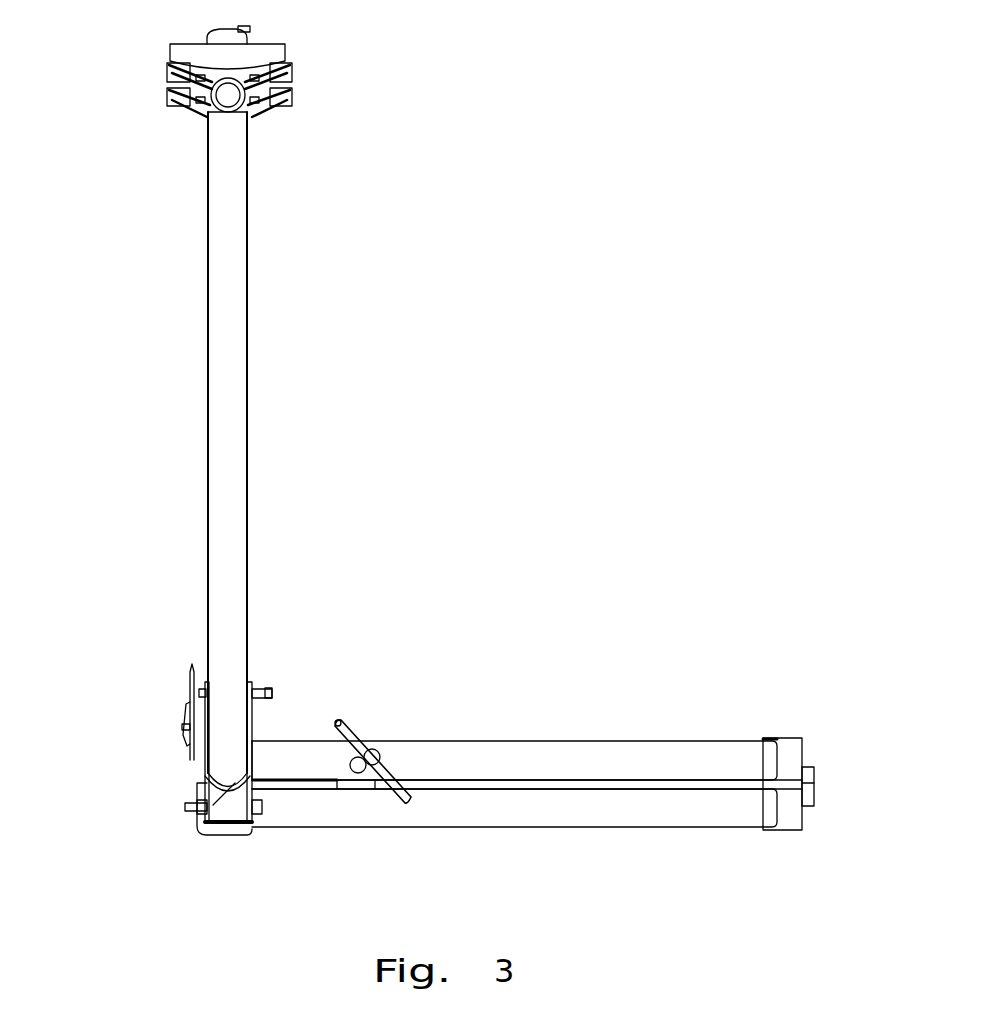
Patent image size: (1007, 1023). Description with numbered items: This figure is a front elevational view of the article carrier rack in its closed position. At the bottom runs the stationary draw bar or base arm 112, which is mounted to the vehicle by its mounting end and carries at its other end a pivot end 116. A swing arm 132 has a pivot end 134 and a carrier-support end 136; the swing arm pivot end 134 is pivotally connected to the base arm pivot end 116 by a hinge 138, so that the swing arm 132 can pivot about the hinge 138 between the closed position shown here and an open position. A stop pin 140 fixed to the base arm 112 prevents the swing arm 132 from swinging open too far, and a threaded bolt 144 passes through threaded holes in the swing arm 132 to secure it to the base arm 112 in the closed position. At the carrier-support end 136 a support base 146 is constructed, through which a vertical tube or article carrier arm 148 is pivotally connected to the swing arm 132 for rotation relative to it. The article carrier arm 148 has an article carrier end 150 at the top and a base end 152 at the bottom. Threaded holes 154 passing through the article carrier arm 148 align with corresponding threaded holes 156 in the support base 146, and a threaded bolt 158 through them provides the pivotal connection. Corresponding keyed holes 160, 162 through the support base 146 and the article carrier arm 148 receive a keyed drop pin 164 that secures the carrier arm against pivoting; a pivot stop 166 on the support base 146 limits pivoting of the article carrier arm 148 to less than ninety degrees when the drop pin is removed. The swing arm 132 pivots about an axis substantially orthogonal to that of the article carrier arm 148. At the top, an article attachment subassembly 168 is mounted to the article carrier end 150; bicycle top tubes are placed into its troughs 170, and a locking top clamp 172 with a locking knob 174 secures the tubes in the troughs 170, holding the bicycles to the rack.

The base arm 112 is at (597, 813).
The pivot end 116 is at (735, 813).
The swing arm 132 is at (532, 753).
The pivot end 134 is at (753, 753).
The carrier-support end 136 is at (270, 758).
The hinge 138 is at (795, 748).
The stop pin 140 is at (815, 780).
The threaded bolt 144 is at (340, 722).
The support base 146 is at (202, 730).
The article carrier arm 148 is at (215, 331).
The article carrier end 150 is at (233, 152).
The base end 152 is at (203, 825).
The threaded holes 154 is at (247, 815).
The threaded holes 156 is at (250, 828).
The threaded bolt 158 is at (260, 803).
The keyed holes 160 is at (252, 688).
The keyed holes 162 is at (253, 697).
The keyed drop pin 164 is at (192, 697).
The pivot stop 166 is at (210, 777).
The article attachment subassembly 168 is at (139, 104).
The troughs 170 is at (294, 79).
The locking top clamp 172 is at (193, 48).
The locking knob 174 is at (246, 30).